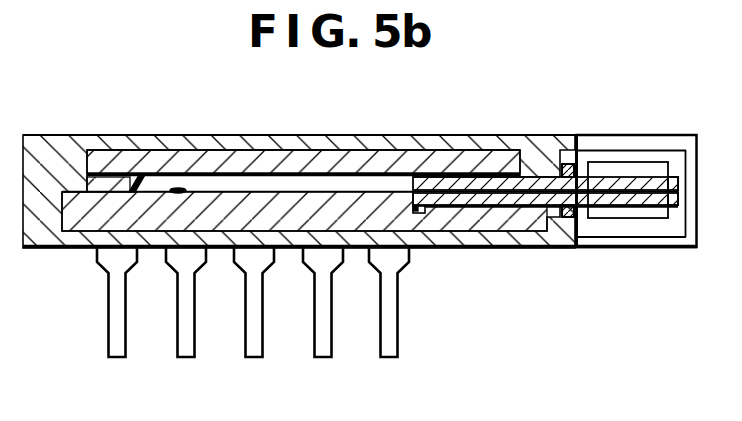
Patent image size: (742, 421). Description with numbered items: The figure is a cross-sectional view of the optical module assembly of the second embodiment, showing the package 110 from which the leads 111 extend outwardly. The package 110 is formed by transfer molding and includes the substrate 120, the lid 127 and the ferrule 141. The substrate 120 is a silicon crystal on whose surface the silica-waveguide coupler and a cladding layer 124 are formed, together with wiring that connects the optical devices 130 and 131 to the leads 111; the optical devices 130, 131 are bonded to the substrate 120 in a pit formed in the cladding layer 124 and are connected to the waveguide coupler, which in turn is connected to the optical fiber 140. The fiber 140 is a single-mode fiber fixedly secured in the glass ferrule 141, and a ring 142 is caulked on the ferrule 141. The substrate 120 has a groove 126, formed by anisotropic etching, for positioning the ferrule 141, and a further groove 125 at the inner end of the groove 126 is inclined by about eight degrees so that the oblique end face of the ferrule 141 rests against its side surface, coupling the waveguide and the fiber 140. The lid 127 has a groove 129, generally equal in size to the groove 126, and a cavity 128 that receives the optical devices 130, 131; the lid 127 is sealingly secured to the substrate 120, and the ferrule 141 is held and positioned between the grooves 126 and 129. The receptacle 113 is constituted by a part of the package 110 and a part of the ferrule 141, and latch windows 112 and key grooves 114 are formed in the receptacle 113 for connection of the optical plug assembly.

The package 110 is at (528, 150).
The leads 111 is at (113, 307).
The latch windows 112 is at (608, 168).
The receptacle 113 is at (637, 157).
The key grooves 114 is at (675, 143).
The substrate 120 is at (360, 227).
The cladding layer 124 is at (257, 173).
The groove 125 is at (422, 214).
The groove 126 is at (472, 209).
The lid 127 is at (305, 160).
The cavity 128 is at (372, 145).
The groove 129 is at (437, 175).
The optical device 130 is at (156, 190).
The optical device 131 is at (178, 188).
The optical fiber 140 is at (672, 207).
The ferrule 141 is at (640, 207).
The ring 142 is at (575, 217).